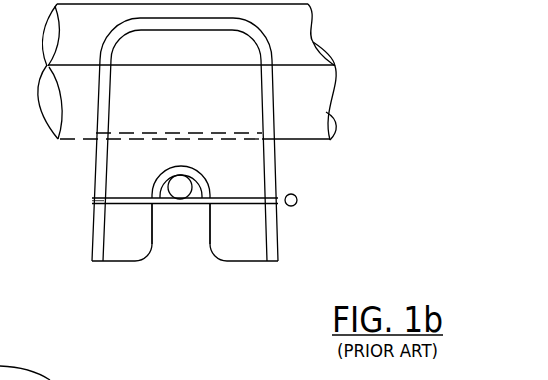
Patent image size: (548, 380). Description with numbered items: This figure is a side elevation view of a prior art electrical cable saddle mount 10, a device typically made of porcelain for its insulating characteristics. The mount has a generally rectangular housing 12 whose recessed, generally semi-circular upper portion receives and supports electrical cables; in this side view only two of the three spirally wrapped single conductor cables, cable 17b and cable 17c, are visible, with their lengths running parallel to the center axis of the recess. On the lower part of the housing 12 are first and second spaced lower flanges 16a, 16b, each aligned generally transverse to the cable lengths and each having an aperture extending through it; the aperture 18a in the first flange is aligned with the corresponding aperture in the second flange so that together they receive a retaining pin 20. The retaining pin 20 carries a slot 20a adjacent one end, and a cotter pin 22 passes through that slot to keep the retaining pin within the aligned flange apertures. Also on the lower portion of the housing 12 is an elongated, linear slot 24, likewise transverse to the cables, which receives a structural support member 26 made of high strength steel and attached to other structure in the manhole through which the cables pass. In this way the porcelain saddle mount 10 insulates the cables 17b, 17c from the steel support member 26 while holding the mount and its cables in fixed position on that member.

The cable saddle mount 10 is at (205, 173).
The housing 12 is at (243, 180).
The first lower flange 16a is at (128, 263).
The second lower flange 16b is at (246, 253).
The electrical cable 17b is at (90, 99).
The electrical cable 17c is at (300, 37).
The aperture 18a is at (118, 208).
The retaining pin 20 is at (180, 205).
The slot 20a is at (77, 195).
The cotter pin 22 is at (309, 188).
The slot 24 is at (155, 221).
The support member 26 is at (191, 172).